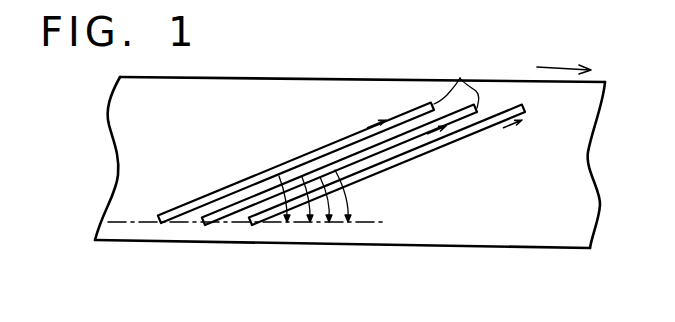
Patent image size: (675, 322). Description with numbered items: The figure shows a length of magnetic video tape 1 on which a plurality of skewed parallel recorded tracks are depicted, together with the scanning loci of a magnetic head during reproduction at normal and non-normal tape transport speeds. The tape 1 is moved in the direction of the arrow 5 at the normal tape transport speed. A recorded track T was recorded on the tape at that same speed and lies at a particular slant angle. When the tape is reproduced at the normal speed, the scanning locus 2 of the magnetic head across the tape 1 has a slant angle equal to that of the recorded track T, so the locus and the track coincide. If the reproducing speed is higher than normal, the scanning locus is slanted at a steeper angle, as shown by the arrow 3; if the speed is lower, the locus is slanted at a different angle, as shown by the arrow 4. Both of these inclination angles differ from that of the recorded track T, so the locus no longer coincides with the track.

The tape 1 is at (549, 242).
The scanning locus 2 is at (412, 124).
The arrow 3 is at (367, 128).
The arrow 4 is at (500, 128).
The arrow 5 is at (555, 67).
The recorded track T is at (460, 78).